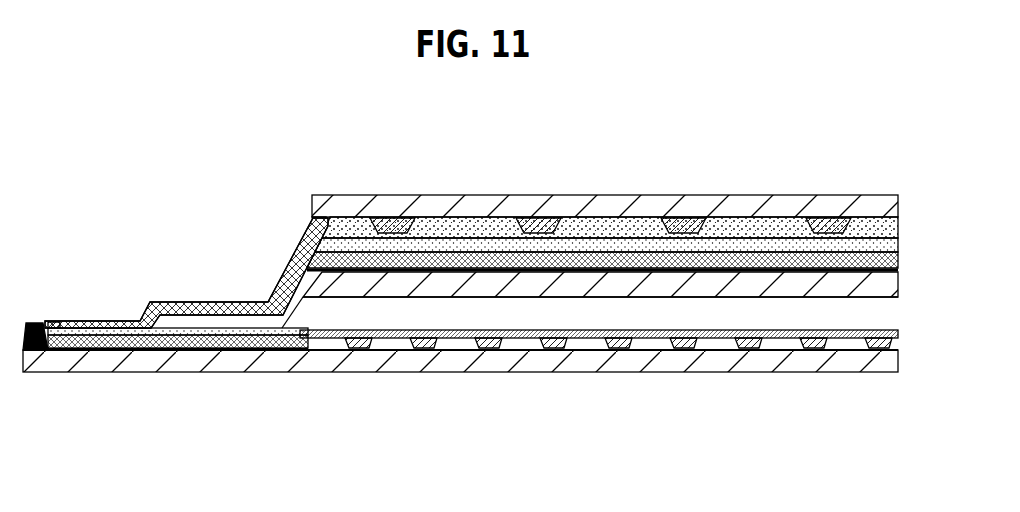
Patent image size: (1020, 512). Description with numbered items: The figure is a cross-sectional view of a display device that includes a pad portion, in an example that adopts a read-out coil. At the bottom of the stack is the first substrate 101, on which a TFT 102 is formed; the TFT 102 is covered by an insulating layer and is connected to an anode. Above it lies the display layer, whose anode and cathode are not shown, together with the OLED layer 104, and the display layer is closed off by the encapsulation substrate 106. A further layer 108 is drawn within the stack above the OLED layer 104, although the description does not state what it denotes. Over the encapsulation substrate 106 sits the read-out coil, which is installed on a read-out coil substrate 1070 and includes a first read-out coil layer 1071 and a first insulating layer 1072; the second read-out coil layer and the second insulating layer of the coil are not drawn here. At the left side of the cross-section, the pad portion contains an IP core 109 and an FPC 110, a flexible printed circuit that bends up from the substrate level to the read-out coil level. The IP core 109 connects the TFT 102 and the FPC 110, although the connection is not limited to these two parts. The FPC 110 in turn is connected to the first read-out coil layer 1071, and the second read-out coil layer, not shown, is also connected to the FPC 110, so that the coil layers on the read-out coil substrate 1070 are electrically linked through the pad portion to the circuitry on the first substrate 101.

The first substrate 101 is at (612, 365).
The TFT 102 is at (748, 348).
The OLED layer 104 is at (460, 312).
The encapsulation substrate 106 is at (870, 265).
The organic light emitting layer 108 is at (797, 242).
The IP core 109 is at (40, 323).
The FPC 110 is at (188, 318).
The read-out coil substrate 1070 is at (716, 220).
The first read-out coil layer 1071 is at (540, 220).
The first insulating layer 1072 is at (453, 212).